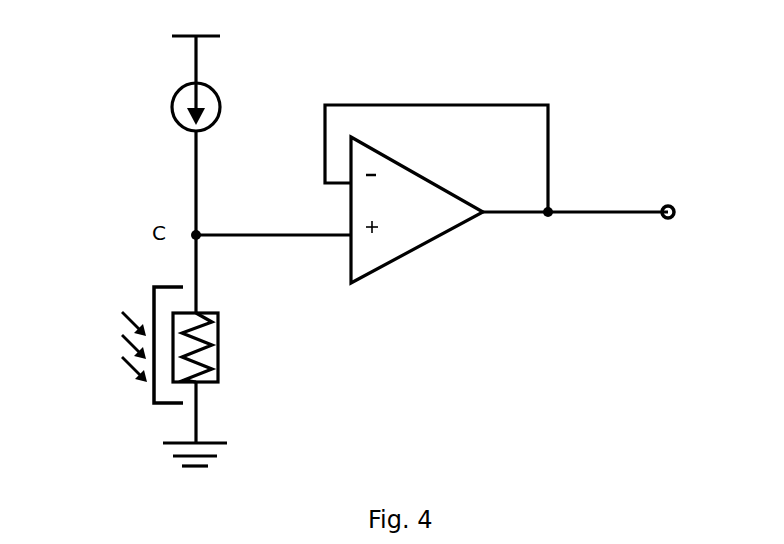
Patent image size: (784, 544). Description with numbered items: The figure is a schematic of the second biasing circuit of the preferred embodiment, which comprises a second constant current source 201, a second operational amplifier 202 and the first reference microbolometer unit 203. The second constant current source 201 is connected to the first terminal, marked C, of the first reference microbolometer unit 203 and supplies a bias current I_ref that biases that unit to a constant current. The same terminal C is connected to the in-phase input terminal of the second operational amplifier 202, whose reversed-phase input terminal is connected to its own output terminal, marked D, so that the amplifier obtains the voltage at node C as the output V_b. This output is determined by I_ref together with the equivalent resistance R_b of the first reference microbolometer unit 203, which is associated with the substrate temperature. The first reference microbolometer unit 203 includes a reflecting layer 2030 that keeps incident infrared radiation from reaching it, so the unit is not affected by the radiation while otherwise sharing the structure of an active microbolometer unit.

The second constant current source 201 is at (241, 81).
The second operational amplifier 202 is at (532, 210).
The first reference microbolometer unit 203 is at (257, 379).
The reflecting layer 2030 is at (108, 318).